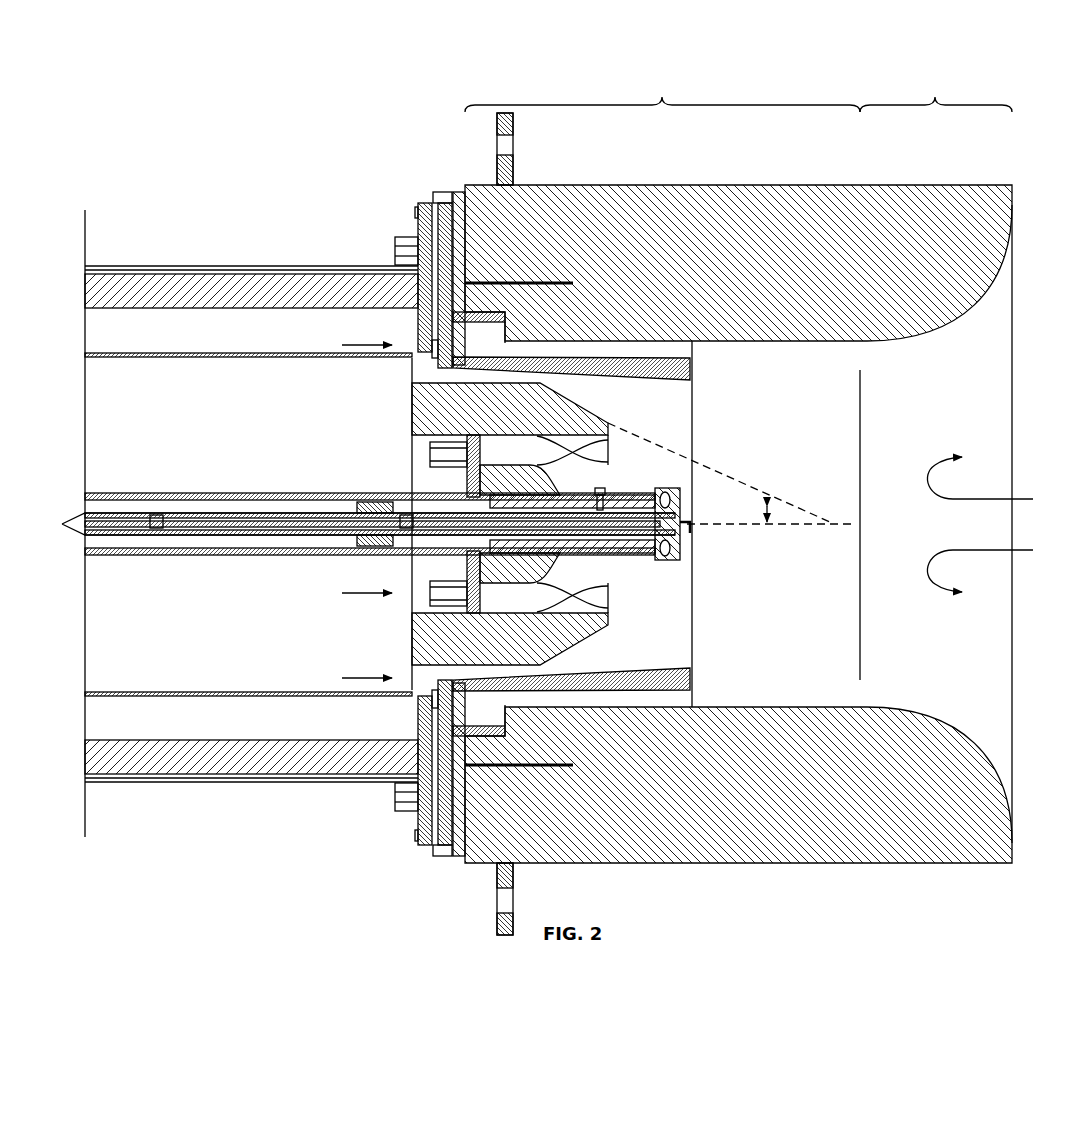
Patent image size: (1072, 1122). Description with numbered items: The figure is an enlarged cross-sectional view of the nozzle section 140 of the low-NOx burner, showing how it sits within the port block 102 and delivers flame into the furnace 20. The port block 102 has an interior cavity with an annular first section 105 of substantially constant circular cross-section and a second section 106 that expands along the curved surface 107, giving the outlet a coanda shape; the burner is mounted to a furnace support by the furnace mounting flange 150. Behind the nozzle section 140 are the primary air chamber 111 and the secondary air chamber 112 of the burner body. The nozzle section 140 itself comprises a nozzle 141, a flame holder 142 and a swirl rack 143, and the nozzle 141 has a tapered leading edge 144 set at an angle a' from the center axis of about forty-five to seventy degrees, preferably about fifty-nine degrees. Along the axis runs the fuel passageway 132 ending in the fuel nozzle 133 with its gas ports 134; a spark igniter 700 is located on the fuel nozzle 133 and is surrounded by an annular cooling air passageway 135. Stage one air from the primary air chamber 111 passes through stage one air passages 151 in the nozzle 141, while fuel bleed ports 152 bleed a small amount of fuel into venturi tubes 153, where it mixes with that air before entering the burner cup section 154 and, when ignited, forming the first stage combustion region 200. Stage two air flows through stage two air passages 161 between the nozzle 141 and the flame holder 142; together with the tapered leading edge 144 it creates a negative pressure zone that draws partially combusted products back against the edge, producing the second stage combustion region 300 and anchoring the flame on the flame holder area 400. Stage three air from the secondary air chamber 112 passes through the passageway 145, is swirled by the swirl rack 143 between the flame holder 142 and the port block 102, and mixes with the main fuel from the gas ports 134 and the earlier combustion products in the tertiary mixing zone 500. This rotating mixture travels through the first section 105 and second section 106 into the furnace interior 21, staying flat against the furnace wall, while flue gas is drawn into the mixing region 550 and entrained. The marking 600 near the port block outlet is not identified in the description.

The furnace 20 is at (1030, 158).
The furnace interior 21 is at (1028, 550).
The port block 102 is at (880, 186).
The first section 105 is at (662, 94).
The second section 106 is at (936, 94).
The curved surface 107 is at (940, 706).
The primary air chamber 111 is at (155, 665).
The secondary air chamber 112 is at (193, 337).
The fuel passageway 132 is at (237, 493).
The fuel nozzle 133 is at (682, 500).
The gas ports 134 is at (663, 556).
The annular cooling air passageway 135 is at (190, 513).
The nozzle section 140 is at (292, 208).
The nozzle 141 is at (422, 412).
The flame holder 142 is at (592, 363).
The swirl rack 143 is at (468, 332).
The tapered leading edge 144 is at (548, 378).
The passageway 145 is at (432, 348).
The furnace mounting flange 150 is at (491, 143).
The stage 1 air passages 151 is at (430, 450).
The fuel bleed ports 152 is at (465, 572).
The venturi tubes 153 is at (478, 610).
The burner cup section 154 is at (600, 450).
The stage 2 air passages 161 is at (420, 370).
The first stage combustion region 200 is at (609, 486).
The second stage combustion region 300 is at (647, 405).
The flame holder area 400 is at (735, 678).
The tertiary mixing zone 500 is at (859, 524).
The mixing region 550 is at (980, 524).
The outer edge 600 is at (1023, 511).
The spark igniter 700 is at (692, 532).
The angle a' is at (792, 502).